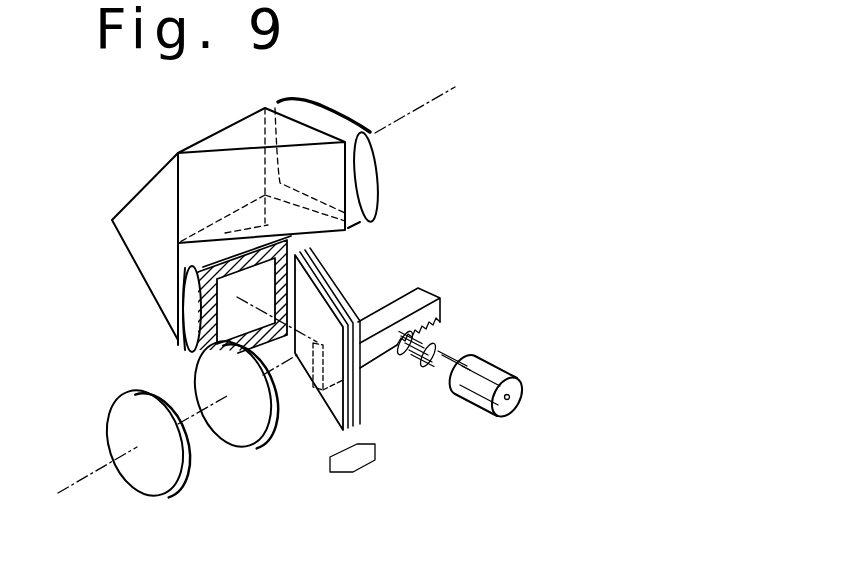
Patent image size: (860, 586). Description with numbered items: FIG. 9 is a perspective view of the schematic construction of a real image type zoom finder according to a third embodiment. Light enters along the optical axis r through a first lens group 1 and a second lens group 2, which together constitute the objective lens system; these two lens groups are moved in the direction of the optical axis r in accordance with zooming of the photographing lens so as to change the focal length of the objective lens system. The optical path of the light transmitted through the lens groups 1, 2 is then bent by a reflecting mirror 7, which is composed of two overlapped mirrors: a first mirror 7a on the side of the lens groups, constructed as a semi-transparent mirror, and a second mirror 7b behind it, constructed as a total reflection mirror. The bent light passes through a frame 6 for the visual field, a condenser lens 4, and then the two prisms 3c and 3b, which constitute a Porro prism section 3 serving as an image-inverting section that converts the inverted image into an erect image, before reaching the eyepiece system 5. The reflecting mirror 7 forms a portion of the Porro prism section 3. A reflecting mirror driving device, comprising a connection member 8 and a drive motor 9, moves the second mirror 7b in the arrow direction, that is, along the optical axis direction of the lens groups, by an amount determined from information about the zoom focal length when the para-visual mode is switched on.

The optical axis r is at (243, 299).
The first lens group 1 is at (145, 473).
The second lens group 2 is at (243, 437).
The Porro prism section 3 is at (134, 153).
The prism 3b is at (233, 132).
The prism 3c is at (138, 248).
The condenser lens 4 is at (188, 320).
The eyepiece system 5 is at (373, 180).
The frame for a visual field 6 is at (297, 243).
The reflecting mirror 7 is at (355, 288).
The first mirror 7a is at (335, 408).
The second mirror 7b is at (358, 400).
The connection member 8 is at (442, 301).
The drive motor 9 is at (497, 362).